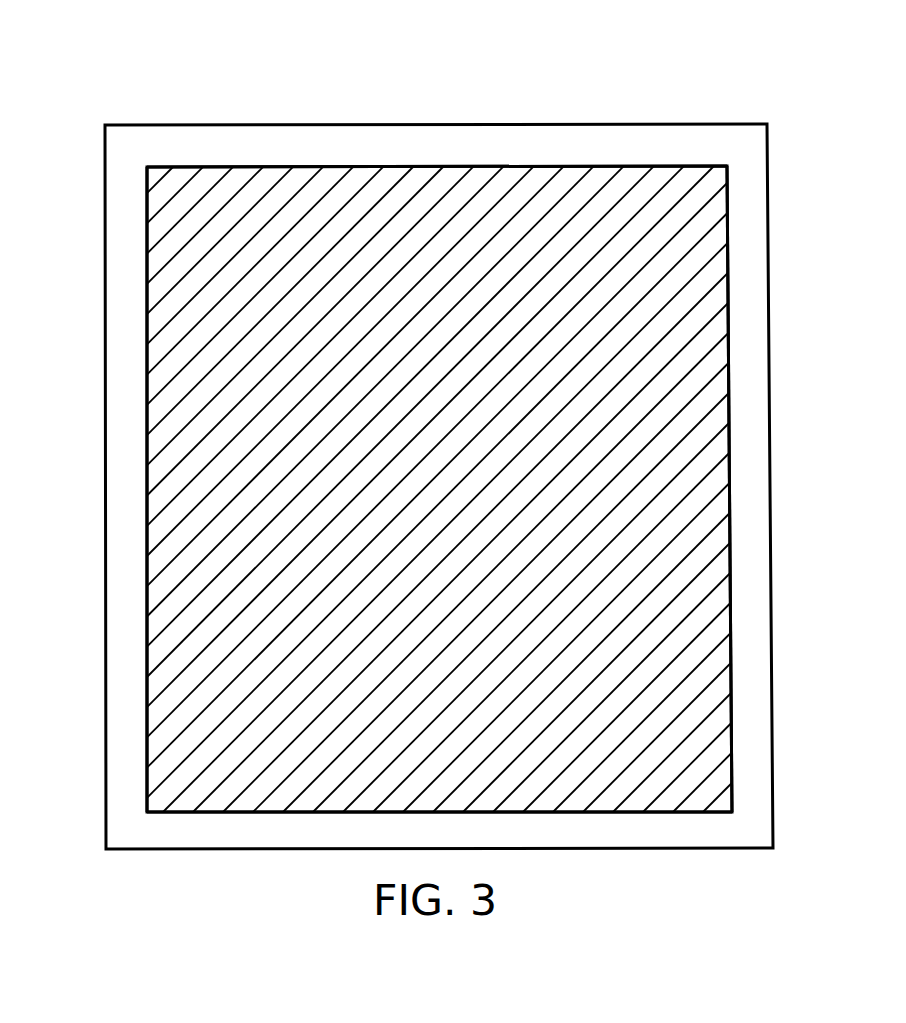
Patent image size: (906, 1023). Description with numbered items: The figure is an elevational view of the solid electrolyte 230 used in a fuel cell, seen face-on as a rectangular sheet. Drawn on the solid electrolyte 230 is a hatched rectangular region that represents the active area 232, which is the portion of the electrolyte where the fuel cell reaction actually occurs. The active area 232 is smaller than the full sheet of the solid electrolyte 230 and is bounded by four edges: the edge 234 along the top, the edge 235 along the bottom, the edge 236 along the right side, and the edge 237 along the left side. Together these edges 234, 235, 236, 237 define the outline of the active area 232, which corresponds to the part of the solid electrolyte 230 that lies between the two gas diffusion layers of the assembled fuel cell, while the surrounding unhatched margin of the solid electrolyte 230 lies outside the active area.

The solid electrolyte 230 is at (166, 94).
The active area 232 is at (513, 233).
The edge 234 is at (340, 167).
The edge 235 is at (620, 812).
The edge 236 is at (728, 370).
The edge 237 is at (147, 305).